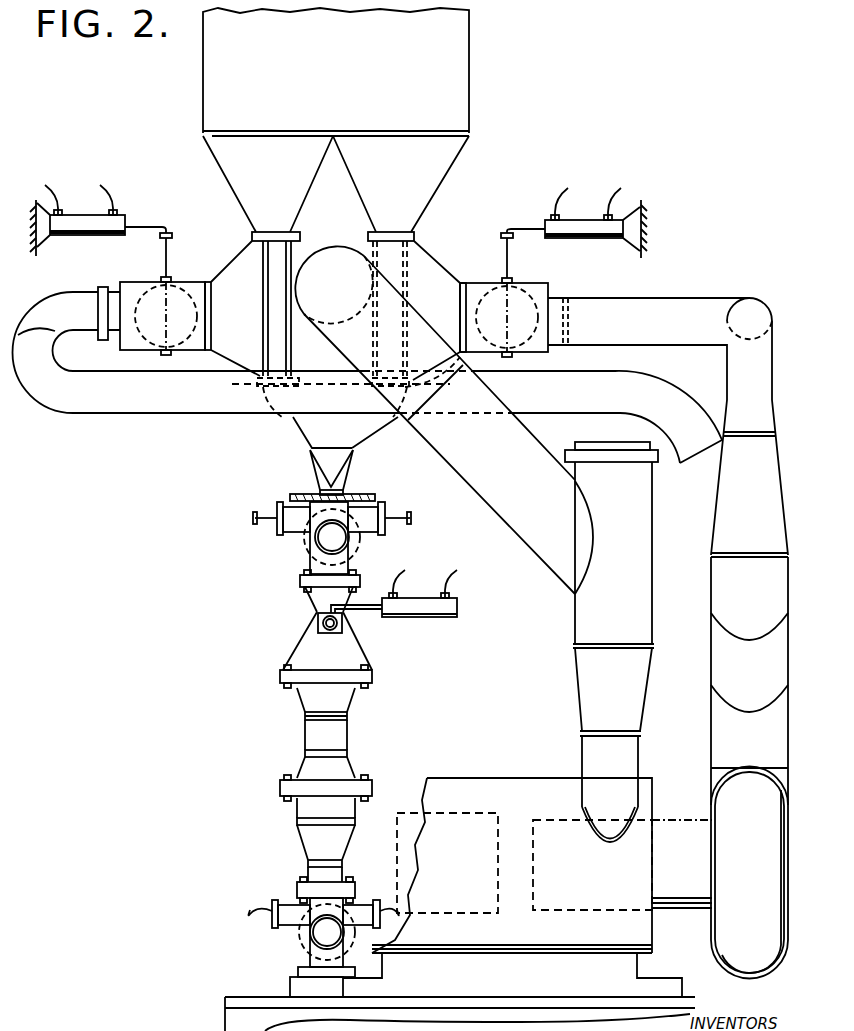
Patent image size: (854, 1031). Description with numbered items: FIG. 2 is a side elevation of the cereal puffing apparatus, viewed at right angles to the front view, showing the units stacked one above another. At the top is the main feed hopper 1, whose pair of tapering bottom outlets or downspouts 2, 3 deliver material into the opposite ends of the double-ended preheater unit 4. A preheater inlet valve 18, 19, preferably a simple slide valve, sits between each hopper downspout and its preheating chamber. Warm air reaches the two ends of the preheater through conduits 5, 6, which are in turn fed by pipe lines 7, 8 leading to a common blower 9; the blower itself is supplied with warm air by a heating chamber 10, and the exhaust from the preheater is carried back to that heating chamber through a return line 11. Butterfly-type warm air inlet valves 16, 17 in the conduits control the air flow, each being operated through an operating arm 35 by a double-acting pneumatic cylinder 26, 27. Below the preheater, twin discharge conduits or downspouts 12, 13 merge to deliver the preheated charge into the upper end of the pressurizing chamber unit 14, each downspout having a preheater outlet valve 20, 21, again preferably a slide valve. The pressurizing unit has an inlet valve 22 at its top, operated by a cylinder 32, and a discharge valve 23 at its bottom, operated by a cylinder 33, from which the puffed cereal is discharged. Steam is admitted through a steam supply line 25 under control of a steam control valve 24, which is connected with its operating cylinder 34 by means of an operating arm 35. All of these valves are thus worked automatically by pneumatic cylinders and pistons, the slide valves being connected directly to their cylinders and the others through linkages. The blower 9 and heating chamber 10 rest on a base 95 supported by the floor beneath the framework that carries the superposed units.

The main feed hopper 1 is at (336, 72).
The downspout 2 is at (440, 164).
The downspout 3 is at (232, 162).
The double-ended preheater unit 4 is at (312, 352).
The conduit 5 is at (480, 284).
The conduit 6 is at (190, 282).
The pipe line 7 is at (681, 298).
The pipe line 8 is at (72, 401).
The blower 9 is at (727, 797).
The heating chamber 10 is at (480, 792).
The line 11 is at (578, 663).
The discharge conduit 12 is at (367, 433).
The discharge conduit 13 is at (299, 433).
The pressurizing chamber unit 14 is at (300, 733).
The warm air inlet valve 16 is at (533, 300).
The warm air inlet valve 17 is at (147, 290).
The preheater inlet valve 18 is at (414, 240).
The preheater inlet valve 19 is at (262, 238).
The preheater outlet valve 20 is at (420, 393).
The preheater outlet valve 21 is at (263, 385).
The inlet valve 22 is at (330, 540).
The discharge valve 23 is at (320, 939).
The steam control valve 24 is at (318, 628).
The steam supply line 25 is at (320, 620).
The pneumatic cylinder 26 is at (584, 222).
The pneumatic cylinder 27 is at (80, 218).
The pneumatic cylinder 32 is at (296, 523).
The pneumatic cylinder 33 is at (288, 905).
The pneumatic cylinder 34 is at (439, 617).
The operating arm 35 is at (496, 606).
The base 95 is at (455, 998).